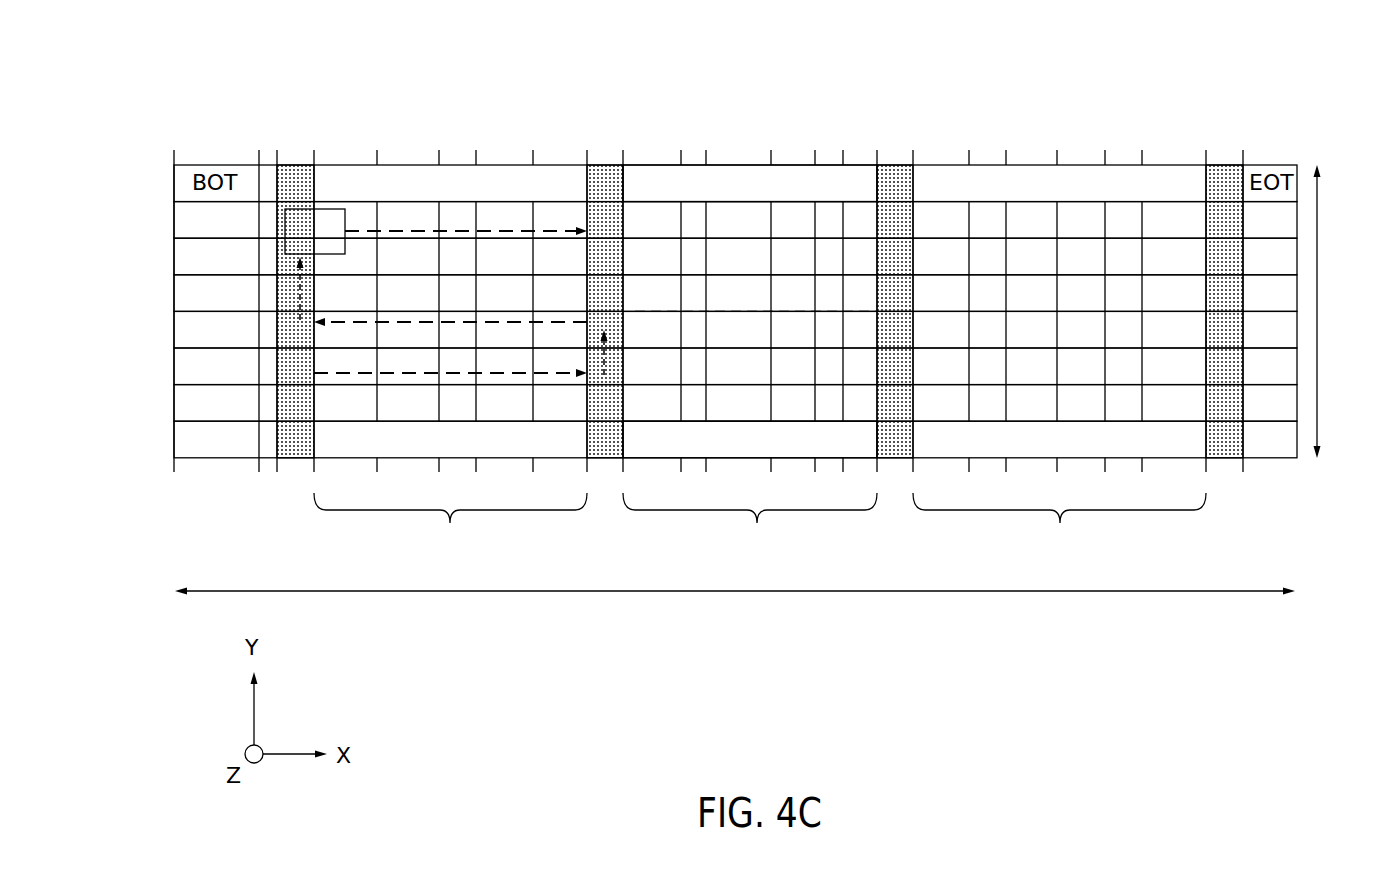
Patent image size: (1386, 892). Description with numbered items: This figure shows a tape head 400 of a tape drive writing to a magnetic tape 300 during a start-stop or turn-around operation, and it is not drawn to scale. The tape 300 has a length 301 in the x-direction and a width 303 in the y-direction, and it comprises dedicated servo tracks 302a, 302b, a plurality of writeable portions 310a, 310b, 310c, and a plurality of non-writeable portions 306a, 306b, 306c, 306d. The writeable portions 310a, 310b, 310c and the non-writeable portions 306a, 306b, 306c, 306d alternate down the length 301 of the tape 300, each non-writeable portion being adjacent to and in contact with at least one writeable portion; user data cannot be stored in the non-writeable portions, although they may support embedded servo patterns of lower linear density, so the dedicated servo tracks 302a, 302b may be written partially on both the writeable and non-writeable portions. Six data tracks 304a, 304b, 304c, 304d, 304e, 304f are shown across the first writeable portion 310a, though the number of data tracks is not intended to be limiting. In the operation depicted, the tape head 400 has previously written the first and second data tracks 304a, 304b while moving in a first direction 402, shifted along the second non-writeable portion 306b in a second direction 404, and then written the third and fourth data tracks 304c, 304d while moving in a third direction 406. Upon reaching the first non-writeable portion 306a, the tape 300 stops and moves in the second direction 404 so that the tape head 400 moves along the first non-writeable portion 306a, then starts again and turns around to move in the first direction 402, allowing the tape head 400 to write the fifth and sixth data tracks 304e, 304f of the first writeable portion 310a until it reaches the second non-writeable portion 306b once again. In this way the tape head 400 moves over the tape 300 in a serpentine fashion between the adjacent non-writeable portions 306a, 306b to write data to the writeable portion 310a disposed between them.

The magnetic tape 300 is at (123, 113).
The length 301 is at (735, 607).
The width 303 is at (1344, 311).
The dedicated servo track 302a is at (862, 194).
The dedicated servo track 302b is at (868, 451).
The first data track 304a is at (735, 403).
The second data track 304b is at (735, 366).
The third data track 304c is at (735, 329).
The fourth data track 304d is at (735, 293).
The fifth data track 304e is at (735, 256).
The sixth data track 304f is at (735, 220).
The first non-writeable portion 306a is at (292, 163).
The second non-writeable portion 306b is at (611, 168).
The non-writeable portion 306c is at (882, 335).
The non-writeable portion 306d is at (1212, 335).
The first writeable portion 310a is at (450, 524).
The writeable portion 310b is at (750, 524).
The writeable portion 310c is at (1059, 524).
The tape head 400 is at (336, 245).
The first direction 402 is at (405, 231).
The second direction 404 is at (305, 300).
The third direction 406 is at (499, 322).